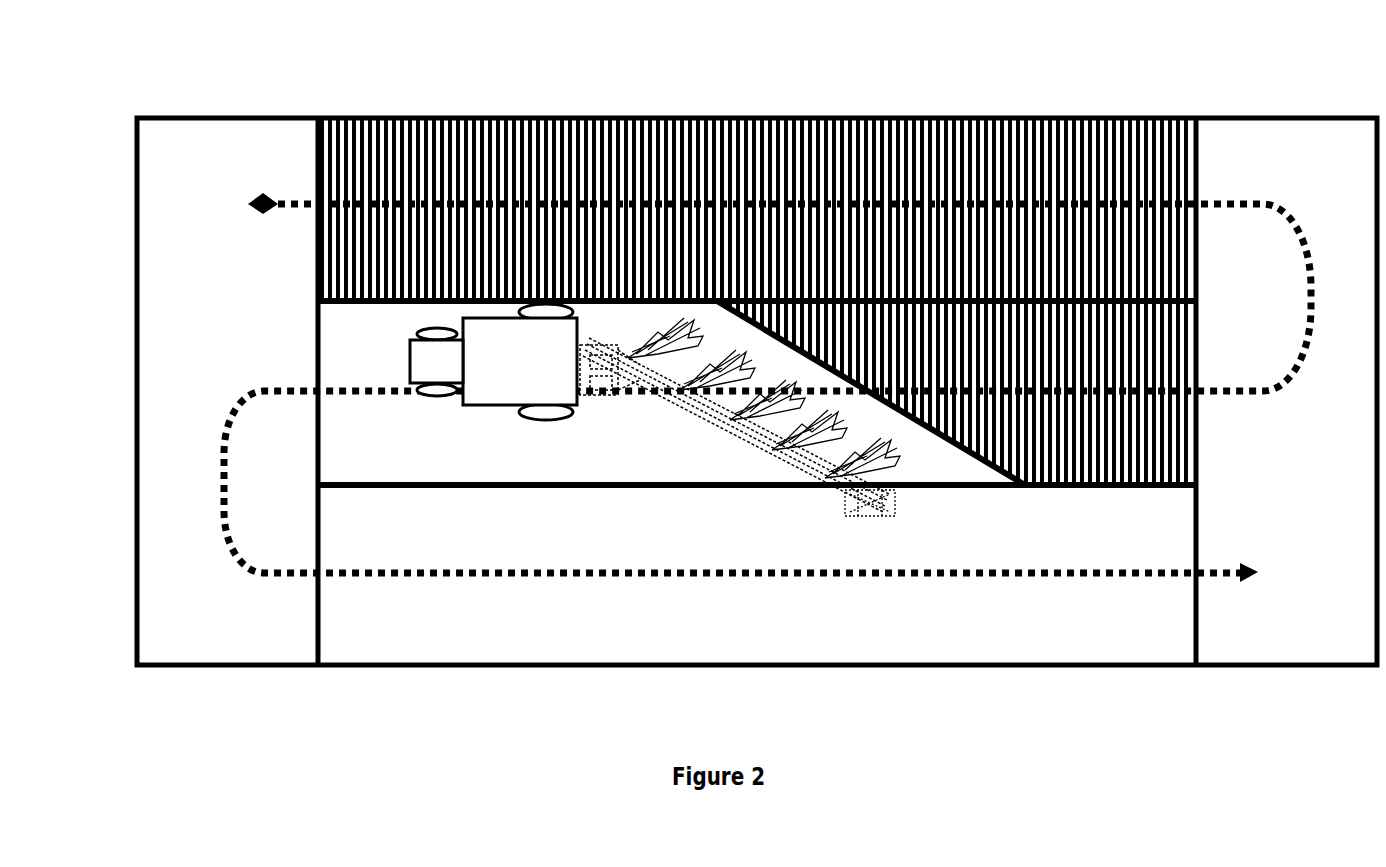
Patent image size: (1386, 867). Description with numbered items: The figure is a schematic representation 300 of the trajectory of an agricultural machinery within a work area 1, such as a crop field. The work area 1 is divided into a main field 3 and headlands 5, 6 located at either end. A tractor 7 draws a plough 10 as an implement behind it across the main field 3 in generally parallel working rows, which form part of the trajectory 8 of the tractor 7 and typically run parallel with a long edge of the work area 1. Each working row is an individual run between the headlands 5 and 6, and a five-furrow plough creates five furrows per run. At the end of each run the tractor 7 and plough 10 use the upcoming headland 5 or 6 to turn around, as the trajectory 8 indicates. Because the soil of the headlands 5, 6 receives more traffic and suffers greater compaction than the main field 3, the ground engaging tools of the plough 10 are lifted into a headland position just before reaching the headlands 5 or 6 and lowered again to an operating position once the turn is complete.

The agricultural field system 300 is at (124, 55).
The work area 1 is at (1216, 82).
The main field 3 is at (864, 97).
The headland 5 is at (1318, 147).
The headland 6 is at (172, 313).
The tractor 7 is at (522, 302).
The trajectory 8 is at (1102, 573).
The plough 10 is at (720, 408).